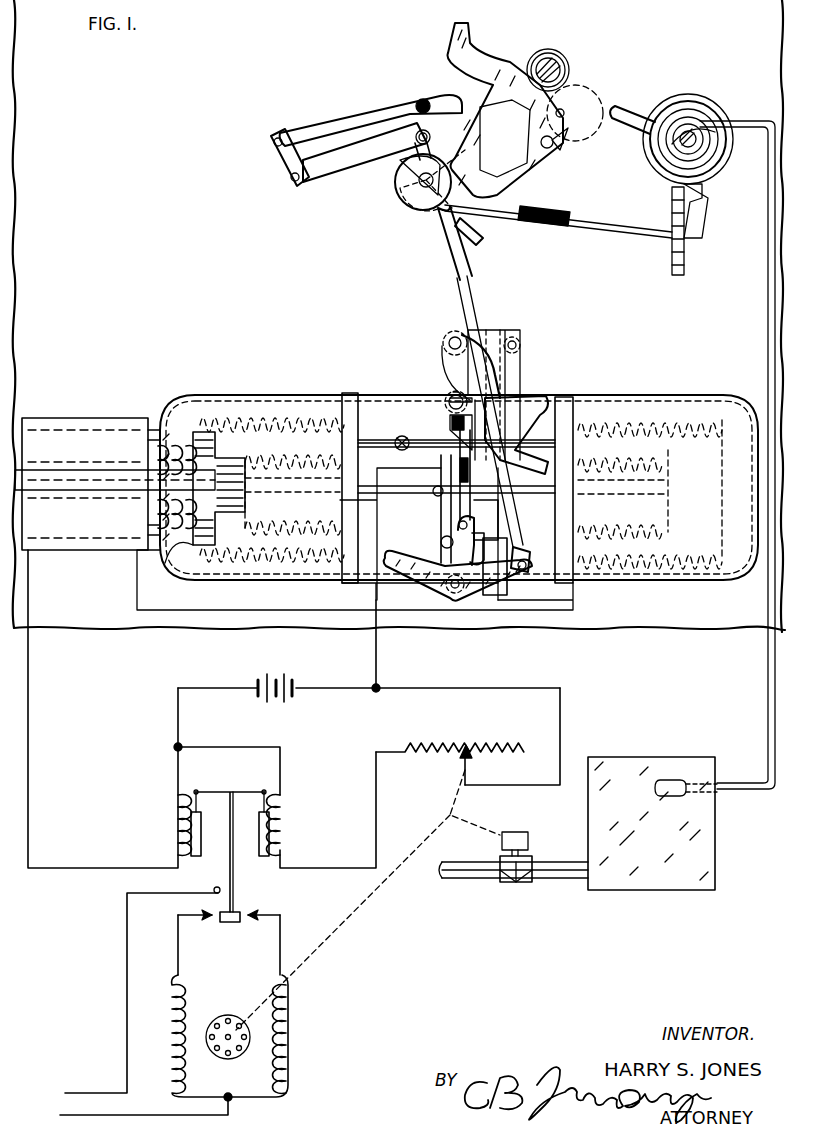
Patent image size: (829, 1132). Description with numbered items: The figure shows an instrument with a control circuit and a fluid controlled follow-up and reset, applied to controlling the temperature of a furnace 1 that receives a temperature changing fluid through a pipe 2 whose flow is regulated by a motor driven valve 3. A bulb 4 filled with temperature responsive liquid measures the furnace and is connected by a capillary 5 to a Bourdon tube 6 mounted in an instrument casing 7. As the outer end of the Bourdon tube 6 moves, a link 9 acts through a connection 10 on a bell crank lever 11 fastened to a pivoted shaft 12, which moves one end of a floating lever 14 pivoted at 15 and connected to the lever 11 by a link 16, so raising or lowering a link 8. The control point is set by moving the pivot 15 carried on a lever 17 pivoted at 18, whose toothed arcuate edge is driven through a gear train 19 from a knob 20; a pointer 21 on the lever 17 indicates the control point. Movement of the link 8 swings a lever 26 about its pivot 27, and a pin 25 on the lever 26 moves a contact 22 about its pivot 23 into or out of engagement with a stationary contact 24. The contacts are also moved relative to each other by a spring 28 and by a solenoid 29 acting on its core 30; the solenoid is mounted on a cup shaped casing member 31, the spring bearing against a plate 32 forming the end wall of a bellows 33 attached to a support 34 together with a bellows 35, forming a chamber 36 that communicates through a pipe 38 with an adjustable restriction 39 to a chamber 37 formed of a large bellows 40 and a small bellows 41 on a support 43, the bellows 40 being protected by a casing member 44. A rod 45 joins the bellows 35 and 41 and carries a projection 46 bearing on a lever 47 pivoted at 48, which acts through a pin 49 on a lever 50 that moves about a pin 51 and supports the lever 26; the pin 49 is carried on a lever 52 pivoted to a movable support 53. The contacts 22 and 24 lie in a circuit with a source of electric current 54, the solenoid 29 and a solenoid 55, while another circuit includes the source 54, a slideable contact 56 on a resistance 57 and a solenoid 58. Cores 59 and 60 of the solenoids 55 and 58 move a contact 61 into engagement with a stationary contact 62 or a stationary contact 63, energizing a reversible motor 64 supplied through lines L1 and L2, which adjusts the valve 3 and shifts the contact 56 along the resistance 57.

The furnace 1 is at (626, 756).
The pipe 2 is at (565, 870).
The motor driven valve 3 is at (514, 886).
The bulb 4 is at (672, 778).
The capillary 5 is at (760, 698).
The Bourdon tube 6 is at (700, 102).
The instrument casing 7 is at (692, 632).
The link 8 is at (437, 232).
The link 9 is at (598, 218).
The connection 10 is at (690, 250).
The bell crank lever 11 is at (371, 110).
The pivoted shaft 12 is at (422, 100).
The floating lever 14 is at (355, 158).
The pivot 15 is at (556, 148).
The link 16 is at (272, 154).
The lever 17 is at (506, 60).
The pivot 18 is at (406, 198).
The gear train 19 is at (594, 96).
The knob 20 is at (552, 56).
The pointer 21 is at (482, 242).
The contact 22 is at (458, 474).
The pivot 23 is at (450, 398).
The stationary contact 24 is at (527, 577).
The pin 25 is at (472, 523).
The lever 26 is at (492, 596).
The pivot 27 is at (454, 592).
The spring 28 is at (158, 424).
The solenoid 29 is at (82, 418).
The core 30 is at (100, 482).
The cup shaped casing member 31 is at (168, 398).
The plate 32 is at (188, 558).
The bellows 33 is at (214, 568).
The support 34 is at (346, 392).
The bellows 35 is at (282, 566).
The chamber 36 is at (248, 566).
The chamber 37 is at (652, 450).
The pipe 38 is at (380, 440).
The adjustable restriction 39 is at (400, 436).
The large bellows 40 is at (608, 416).
The small bellows 41 is at (596, 450).
The support 43 is at (564, 396).
The cup shaped casing member 44 is at (718, 398).
The rod 45 is at (530, 490).
The projection 46 is at (428, 490).
The lever 47 is at (442, 512).
The pivot 48 is at (441, 542).
The pin 49 is at (450, 420).
The lever 50 is at (478, 532).
The pin 51 is at (448, 396).
The lever 52 is at (476, 338).
The movable support 53 is at (520, 330).
The source of electric current 54 is at (284, 680).
The solenoid 55 is at (172, 814).
The slideable contact 56 is at (468, 758).
The resistance 57 is at (440, 746).
The solenoid 58 is at (280, 816).
The core 59 is at (198, 840).
The core 60 is at (262, 848).
The contact 61 is at (232, 926).
The stationary contact 62 is at (210, 920).
The stationary contact 63 is at (242, 920).
The reversible motor 64 is at (246, 1040).
The line L1 is at (66, 1092).
The line L2 is at (60, 1114).